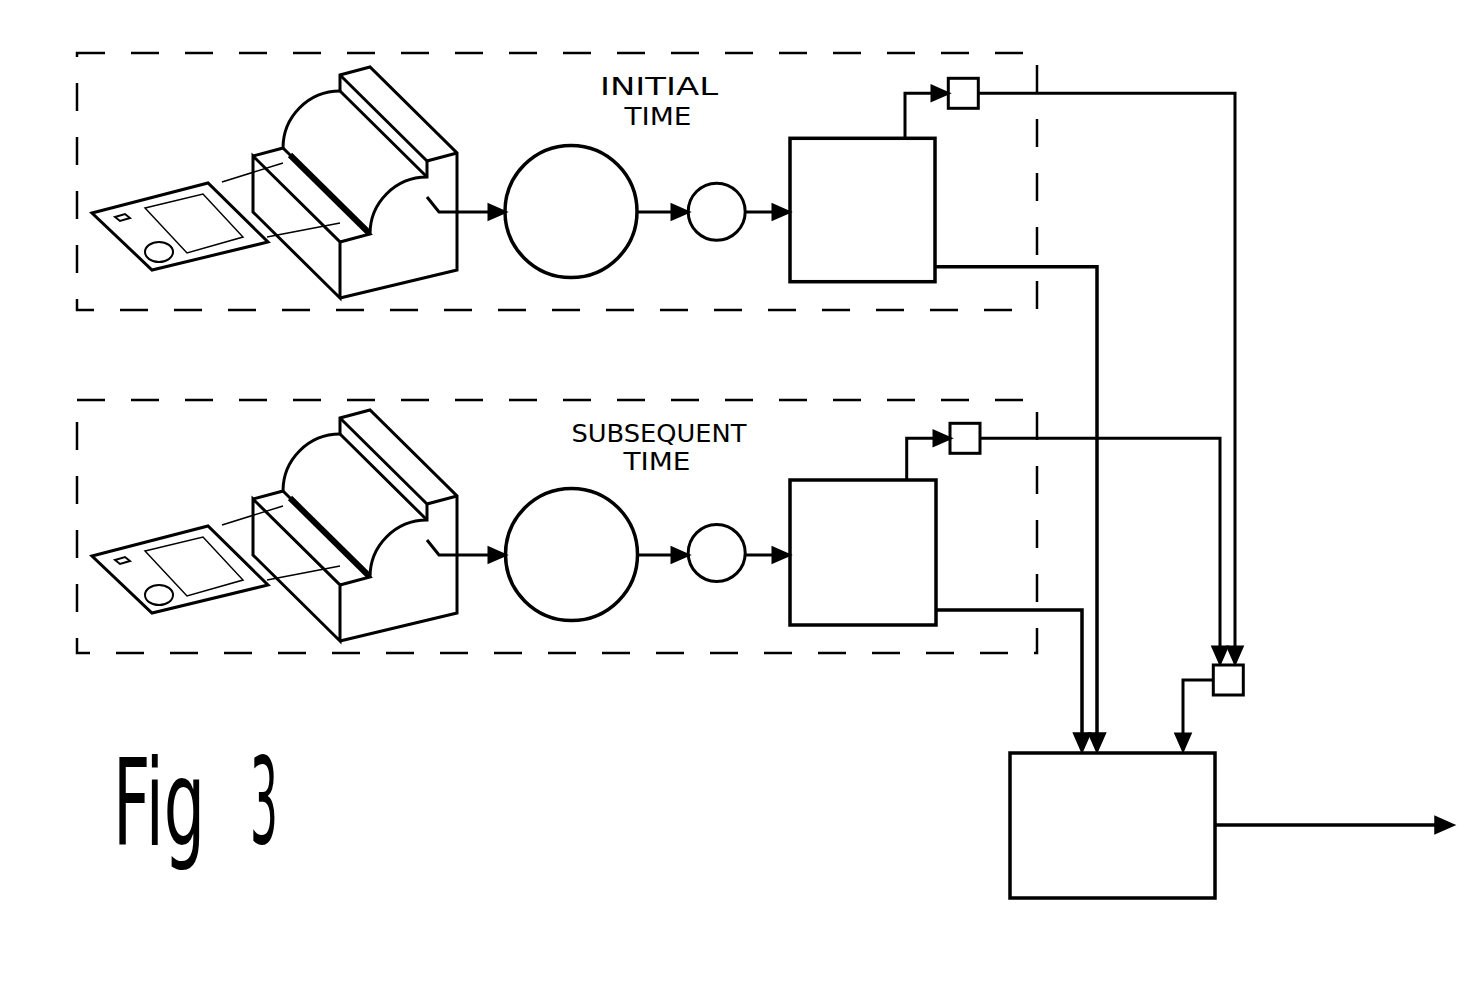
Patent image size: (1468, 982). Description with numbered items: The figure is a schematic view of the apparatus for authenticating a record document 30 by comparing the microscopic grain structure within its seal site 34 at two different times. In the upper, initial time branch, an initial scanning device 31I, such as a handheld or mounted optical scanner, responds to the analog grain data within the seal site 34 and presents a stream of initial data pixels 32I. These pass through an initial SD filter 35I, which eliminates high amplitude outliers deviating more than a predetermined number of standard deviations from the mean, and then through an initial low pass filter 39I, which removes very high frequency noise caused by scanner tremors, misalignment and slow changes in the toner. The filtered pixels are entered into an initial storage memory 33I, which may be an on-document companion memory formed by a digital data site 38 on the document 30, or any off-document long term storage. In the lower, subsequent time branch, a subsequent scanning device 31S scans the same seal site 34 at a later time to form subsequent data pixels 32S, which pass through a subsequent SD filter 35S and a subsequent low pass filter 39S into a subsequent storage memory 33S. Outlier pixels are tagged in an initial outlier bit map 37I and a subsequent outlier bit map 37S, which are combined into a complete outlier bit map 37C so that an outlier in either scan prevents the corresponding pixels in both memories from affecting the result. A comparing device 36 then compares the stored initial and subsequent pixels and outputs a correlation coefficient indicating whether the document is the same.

The record document 30 is at (177, 188).
The initial scanning device 31I is at (303, 142).
The subsequent scanning device 31S is at (339, 525).
The initial data pixels 32I is at (473, 205).
The subsequent data pixels 32S is at (473, 548).
The initial storage memory 33I is at (947, 444).
The subsequent storage memory 33S is at (939, 615).
The seal site 34 is at (153, 252).
The initial SD filter 35I is at (571, 212).
The subsequent SD filter 35S is at (572, 555).
The comparing device 36 is at (1231, 825).
The initial outlier bit map 37I is at (967, 100).
The subsequent outlier bit map 37S is at (968, 445).
The complete outlier bit map 37C is at (1232, 687).
The digital data site 38 is at (118, 213).
The initial low pass filter 39I is at (725, 173).
The subsequent low pass filter 39S is at (725, 516).